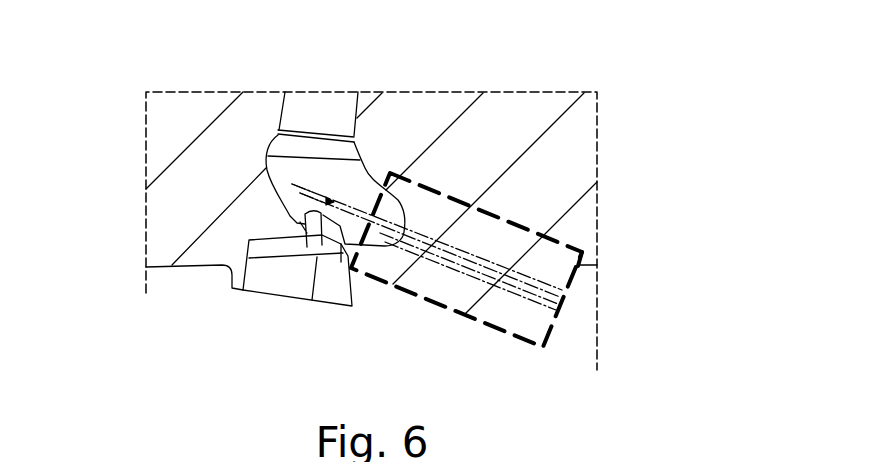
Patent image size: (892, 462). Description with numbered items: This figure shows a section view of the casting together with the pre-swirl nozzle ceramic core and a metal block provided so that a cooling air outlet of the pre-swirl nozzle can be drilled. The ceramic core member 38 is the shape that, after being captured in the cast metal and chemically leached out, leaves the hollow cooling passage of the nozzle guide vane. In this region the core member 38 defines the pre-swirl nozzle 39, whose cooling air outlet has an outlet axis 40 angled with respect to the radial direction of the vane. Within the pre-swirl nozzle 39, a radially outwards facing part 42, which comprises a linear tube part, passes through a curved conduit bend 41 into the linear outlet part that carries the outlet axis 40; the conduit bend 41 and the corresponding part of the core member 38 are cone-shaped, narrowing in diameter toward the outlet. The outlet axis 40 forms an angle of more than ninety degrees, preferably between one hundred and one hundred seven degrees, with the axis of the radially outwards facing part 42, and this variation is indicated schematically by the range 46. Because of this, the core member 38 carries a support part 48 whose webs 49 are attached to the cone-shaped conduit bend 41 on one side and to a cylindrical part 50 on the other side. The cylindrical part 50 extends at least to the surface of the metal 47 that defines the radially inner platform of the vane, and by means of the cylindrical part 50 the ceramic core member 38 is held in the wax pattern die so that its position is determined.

The ceramic core member 38 is at (232, 123).
The pre-swirl nozzle 39 is at (276, 132).
The outlet axis 40 is at (452, 245).
The curved conduit bend 41 is at (297, 177).
The radially outwards facing part 42 is at (318, 108).
The range 46 is at (572, 296).
The metal 47 is at (503, 303).
The support part 48 is at (258, 277).
The webs 49 is at (303, 233).
The cylindrical part 50 is at (272, 282).